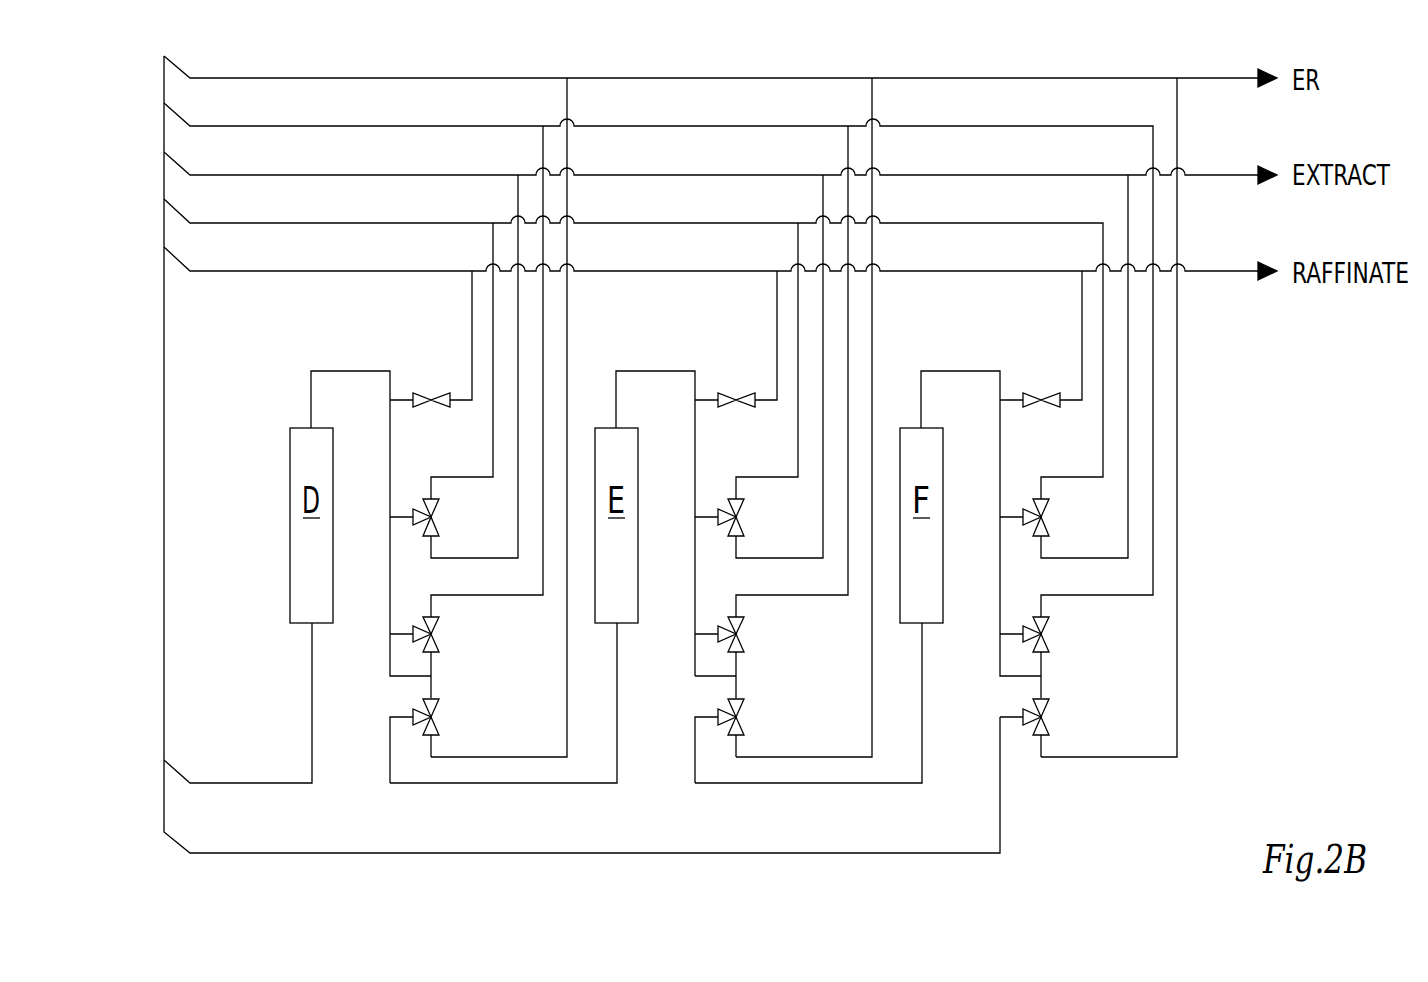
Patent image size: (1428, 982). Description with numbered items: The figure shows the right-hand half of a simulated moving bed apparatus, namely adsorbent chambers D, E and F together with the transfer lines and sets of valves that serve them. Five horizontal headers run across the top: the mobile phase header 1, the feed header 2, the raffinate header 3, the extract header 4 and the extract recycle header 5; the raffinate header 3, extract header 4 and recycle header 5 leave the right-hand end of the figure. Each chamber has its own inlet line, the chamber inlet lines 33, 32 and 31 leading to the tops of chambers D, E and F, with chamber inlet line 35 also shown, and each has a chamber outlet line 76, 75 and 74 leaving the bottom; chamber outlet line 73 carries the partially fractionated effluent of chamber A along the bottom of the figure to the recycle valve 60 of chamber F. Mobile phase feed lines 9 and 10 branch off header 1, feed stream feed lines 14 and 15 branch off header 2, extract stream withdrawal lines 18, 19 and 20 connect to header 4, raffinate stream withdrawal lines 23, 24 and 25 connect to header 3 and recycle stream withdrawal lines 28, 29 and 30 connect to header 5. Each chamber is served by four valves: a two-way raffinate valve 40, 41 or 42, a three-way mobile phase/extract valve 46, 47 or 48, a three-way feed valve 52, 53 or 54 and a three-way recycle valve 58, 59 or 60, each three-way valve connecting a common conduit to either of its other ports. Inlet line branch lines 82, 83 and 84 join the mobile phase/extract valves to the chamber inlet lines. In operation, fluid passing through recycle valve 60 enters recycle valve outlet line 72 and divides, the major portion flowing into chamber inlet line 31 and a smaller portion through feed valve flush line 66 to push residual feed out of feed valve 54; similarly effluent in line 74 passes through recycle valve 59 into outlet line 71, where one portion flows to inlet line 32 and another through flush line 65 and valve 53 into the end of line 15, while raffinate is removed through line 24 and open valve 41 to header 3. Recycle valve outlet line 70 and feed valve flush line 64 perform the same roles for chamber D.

The mobile phase header 1 is at (633, 341).
The feed header 2 is at (658, 364).
The raffinate header 3 is at (350, 271).
The extract header 4 is at (360, 175).
The (extract) recycle header 5 is at (365, 78).
The mobile phase feed line 9 is at (493, 242).
The mobile phase feed line 10 is at (766, 361).
The feed stream feed line 14 is at (543, 578).
The feed stream feed line 15 is at (744, 384).
The extract stream withdrawal line 18 is at (490, 554).
The extract stream withdrawal line 19 is at (779, 366).
The extract stream withdrawal line 20 is at (1084, 366).
The raffinate stream withdrawal line 23 is at (472, 340).
The raffinate stream withdrawal line 24 is at (745, 335).
The raffinate stream withdrawal line 25 is at (1050, 335).
The recycle stream withdrawal line 28 is at (567, 705).
The recycle stream withdrawal line 29 is at (804, 417).
The recycle stream withdrawal line 30 is at (1109, 417).
The chamber inlet line 31 is at (981, 521).
The chamber inlet line 32 is at (655, 506).
The chamber inlet line 33 is at (348, 370).
The chamber inlet line 35 is at (686, 690).
The raffinate valve 40 is at (425, 393).
The raffinate valve 41 is at (725, 383).
The raffinate valve 42 is at (1030, 383).
The mobile phase/extract valve 46 is at (413, 512).
The mobile phase/extract valve 47 is at (699, 516).
The mobile phase/extract valve 48 is at (1004, 516).
The feed valve 52 is at (440, 629).
The feed valve 53 is at (762, 630).
The feed valve 54 is at (1067, 630).
The recycle valve 58 is at (416, 721).
The recycle valve 59 is at (689, 751).
The recycle valve 60 is at (998, 751).
The feed valve flush line 64 is at (440, 661).
The feed valve flush line 65 is at (769, 667).
The feed valve flush line 66 is at (1074, 667).
The recycle valve outlet line 70 is at (440, 688).
The recycle valve outlet line 71 is at (761, 717).
The recycle valve outlet line 72 is at (1066, 717).
The chamber outlet line 73 is at (828, 853).
The chamber outlet line 74 is at (808, 723).
The chamber outlet line 75 is at (503, 723).
The chamber outlet line 76 is at (258, 783).
The inlet line branch line 82 is at (401, 520).
The inlet line branch line 83 is at (695, 535).
The inlet line branch line 84 is at (1000, 535).